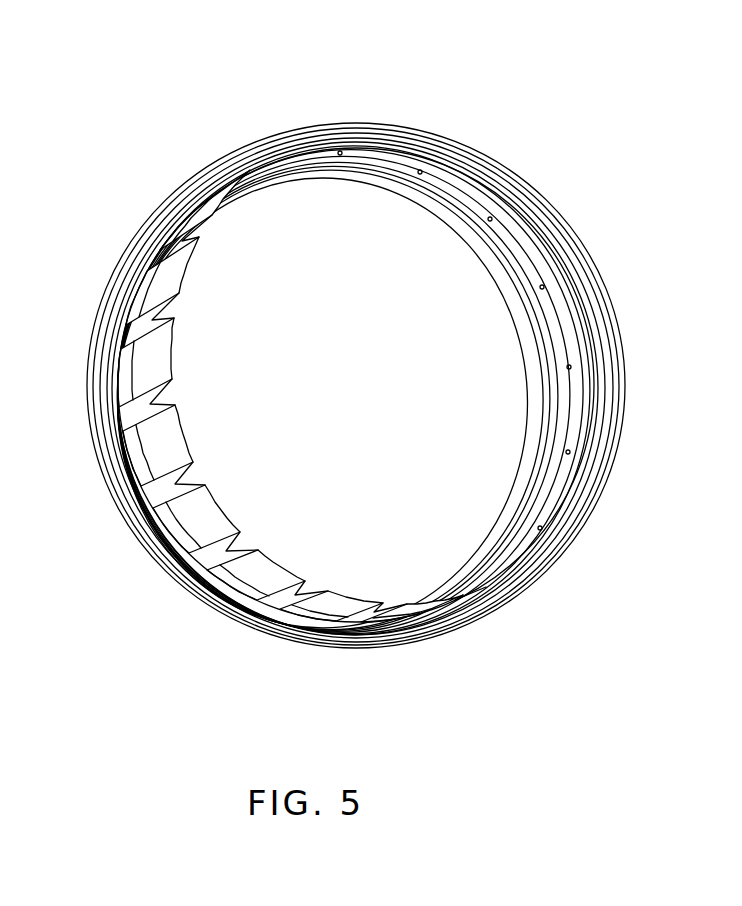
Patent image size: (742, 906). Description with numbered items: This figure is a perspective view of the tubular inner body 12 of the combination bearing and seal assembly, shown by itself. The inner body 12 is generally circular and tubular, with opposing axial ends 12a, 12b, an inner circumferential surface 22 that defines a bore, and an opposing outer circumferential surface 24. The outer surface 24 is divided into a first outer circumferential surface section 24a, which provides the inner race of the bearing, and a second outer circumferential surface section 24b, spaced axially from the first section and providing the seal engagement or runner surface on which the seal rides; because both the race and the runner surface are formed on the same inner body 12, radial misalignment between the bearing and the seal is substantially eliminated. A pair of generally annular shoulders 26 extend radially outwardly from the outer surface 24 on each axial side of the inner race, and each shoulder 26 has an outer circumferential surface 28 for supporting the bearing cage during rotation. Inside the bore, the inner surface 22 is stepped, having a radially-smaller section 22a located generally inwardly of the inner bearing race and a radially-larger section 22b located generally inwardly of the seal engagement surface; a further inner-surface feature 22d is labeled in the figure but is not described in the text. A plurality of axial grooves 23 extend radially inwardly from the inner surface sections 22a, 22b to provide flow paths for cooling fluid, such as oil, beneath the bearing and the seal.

The tubular inner body 12 is at (256, 91).
The axial end 12a is at (618, 322).
The axial end 12b is at (143, 555).
The inner circumferential surface 22 is at (168, 450).
The radially-smaller section 22a is at (208, 515).
The radially-larger section 22b is at (300, 610).
The pad 22d is at (223, 600).
The axial grooves 23 is at (155, 333).
The outer circumferential surface 24 is at (553, 535).
The first outer circumferential surface section 24a is at (533, 235).
The second outer circumferential surface section 24b is at (562, 428).
The annular shoulders 26 is at (443, 162).
The outer circumferential surface 28 is at (396, 142).